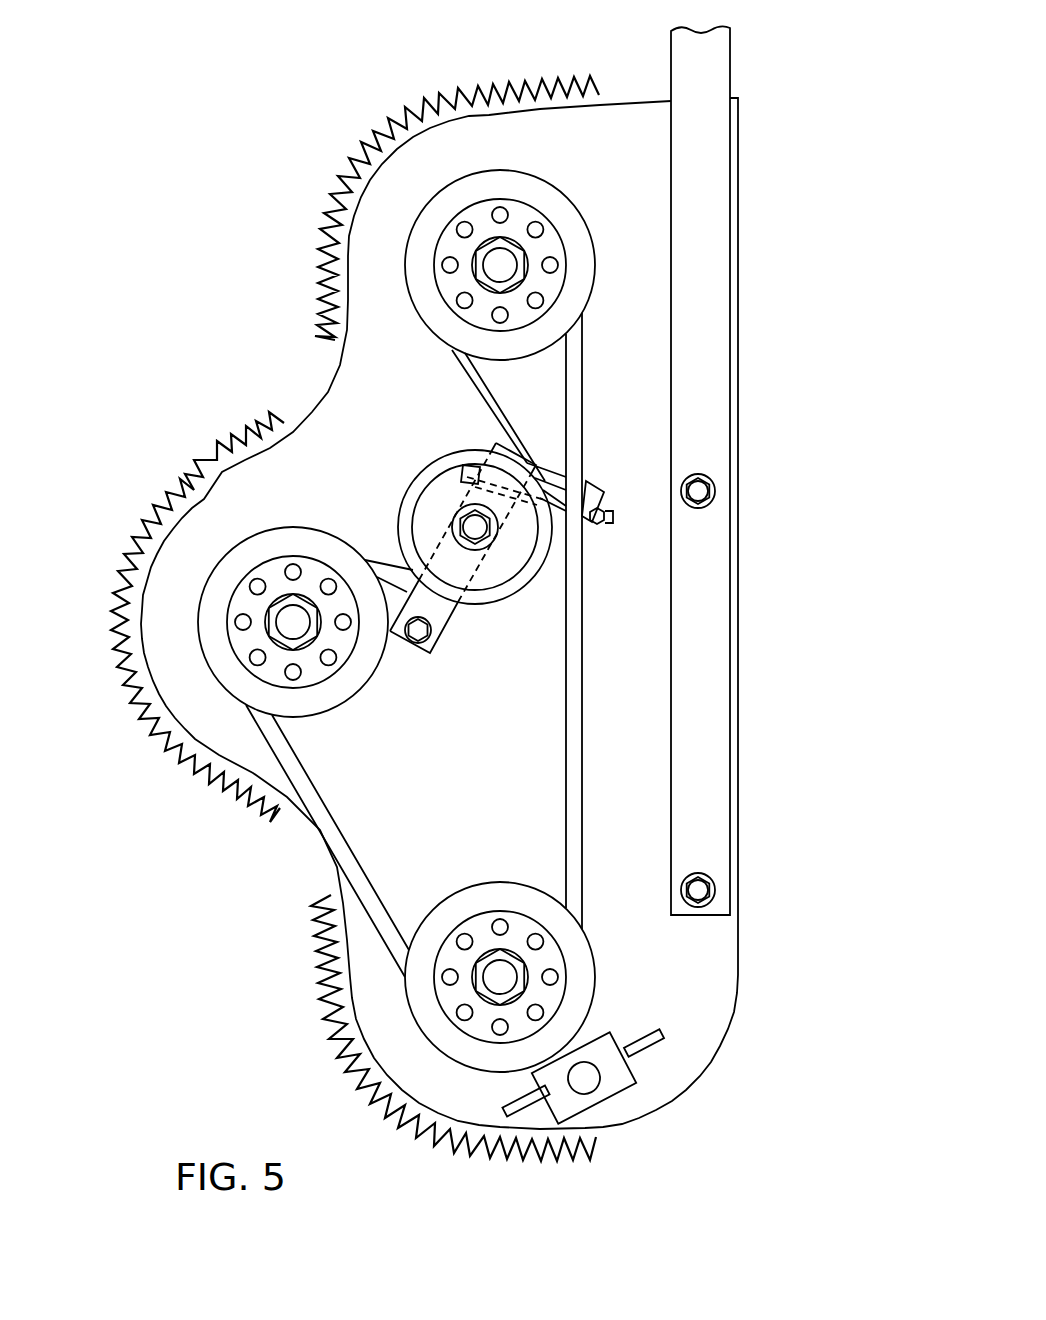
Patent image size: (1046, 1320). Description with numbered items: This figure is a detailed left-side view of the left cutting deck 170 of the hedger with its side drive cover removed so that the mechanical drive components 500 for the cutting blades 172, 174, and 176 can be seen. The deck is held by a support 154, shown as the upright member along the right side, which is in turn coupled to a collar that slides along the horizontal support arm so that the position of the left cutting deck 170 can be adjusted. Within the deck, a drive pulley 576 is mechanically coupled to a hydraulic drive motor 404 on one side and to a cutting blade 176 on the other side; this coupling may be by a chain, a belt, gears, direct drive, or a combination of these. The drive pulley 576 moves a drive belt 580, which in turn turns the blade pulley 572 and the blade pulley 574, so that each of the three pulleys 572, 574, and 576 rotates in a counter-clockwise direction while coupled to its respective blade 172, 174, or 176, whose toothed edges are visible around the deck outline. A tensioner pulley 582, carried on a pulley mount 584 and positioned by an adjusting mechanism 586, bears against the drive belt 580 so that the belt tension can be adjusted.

The mechanical drive components 500 is at (185, 186).
The support 154 is at (729, 45).
The left cutting deck 170 is at (800, 775).
The cutting blade 172 is at (410, 106).
The cutting blade 174 is at (170, 492).
The cutting blade 176 is at (326, 1022).
The blade pulley 572 is at (553, 188).
The blade pulley 574 is at (362, 512).
The drive pulley 576 is at (498, 882).
The drive belt 580 is at (584, 625).
The tensioner pulley 582 is at (457, 457).
The pulley mount 584 is at (447, 625).
The adjusting mechanism 586 is at (504, 471).
The hydraulic drive motor 404 is at (617, 1046).